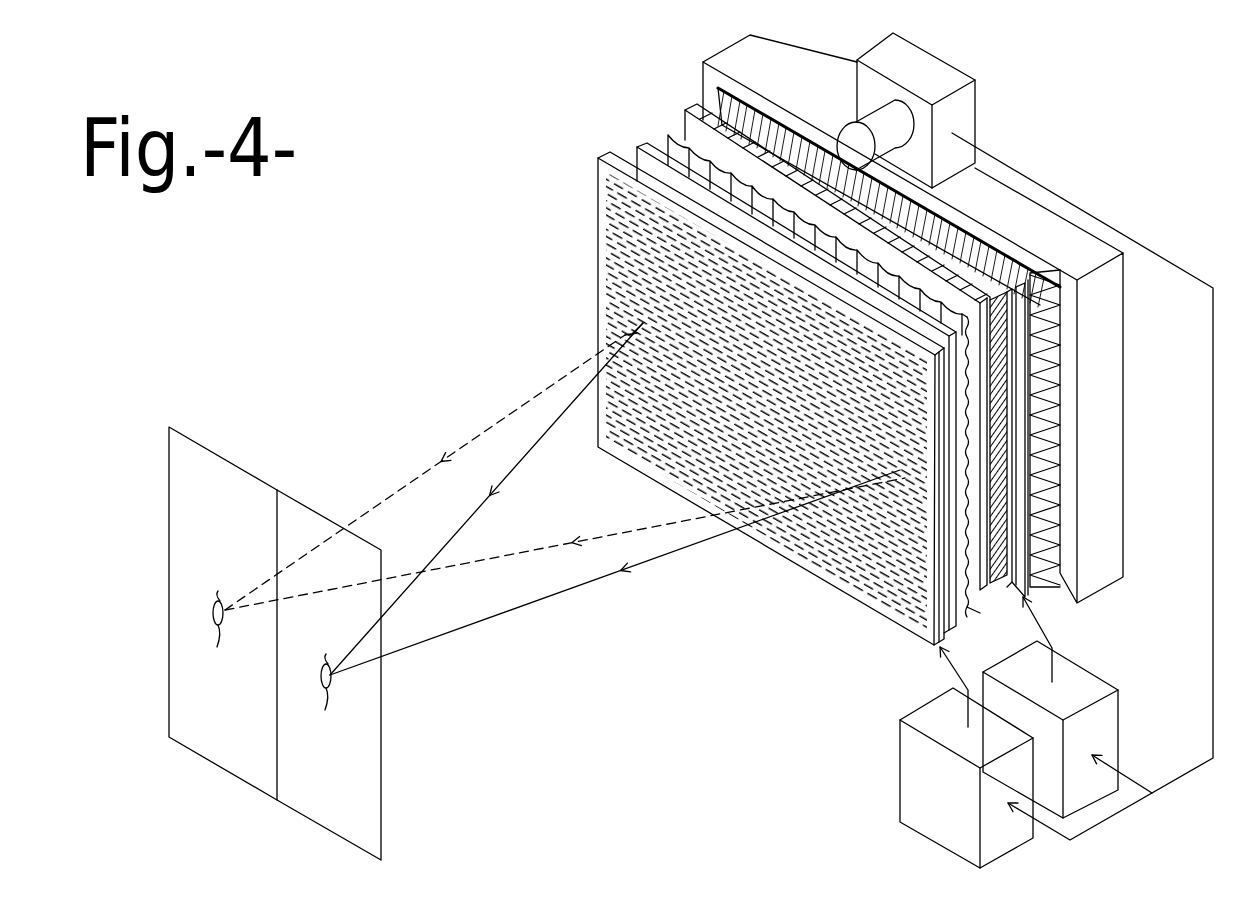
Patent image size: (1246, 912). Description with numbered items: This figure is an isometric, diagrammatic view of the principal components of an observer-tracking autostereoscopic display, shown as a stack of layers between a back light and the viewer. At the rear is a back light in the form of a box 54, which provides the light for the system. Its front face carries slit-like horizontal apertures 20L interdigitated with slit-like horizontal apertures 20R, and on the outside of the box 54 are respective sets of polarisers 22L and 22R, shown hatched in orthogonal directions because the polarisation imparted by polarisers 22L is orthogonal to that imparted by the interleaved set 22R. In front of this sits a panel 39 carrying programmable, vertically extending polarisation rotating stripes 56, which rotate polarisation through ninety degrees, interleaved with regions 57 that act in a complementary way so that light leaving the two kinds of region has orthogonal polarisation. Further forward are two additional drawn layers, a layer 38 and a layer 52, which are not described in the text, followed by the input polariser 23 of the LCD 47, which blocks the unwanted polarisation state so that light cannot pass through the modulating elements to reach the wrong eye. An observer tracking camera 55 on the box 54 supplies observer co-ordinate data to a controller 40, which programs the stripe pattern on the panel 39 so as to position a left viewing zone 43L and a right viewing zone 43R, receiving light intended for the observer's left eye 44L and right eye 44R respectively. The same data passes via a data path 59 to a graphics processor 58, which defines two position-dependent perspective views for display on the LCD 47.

The slit-like horizontal apertures 20L is at (1058, 414).
The slit-like horizontal apertures 20R is at (1057, 456).
The polarisers 22L is at (1057, 392).
The polarisers 22R is at (1057, 430).
The input polariser 23 is at (605, 157).
The lenticular lens array 38 is at (668, 133).
The panel 39 is at (684, 110).
The controller 40 is at (1088, 678).
The viewing zone 43L is at (193, 515).
The viewing zone 43R is at (370, 720).
The left eye 44L is at (212, 610).
The right eye 44R is at (331, 678).
The LCD 47 is at (853, 600).
The polarizer plate 52 is at (643, 147).
The box 54 is at (1077, 238).
The observer tracking camera 55 is at (890, 55).
The polarisation rotating vertically extending stripes 56 is at (752, 130).
The interleaved regions 57 is at (1010, 300).
The graphics processor 58 is at (927, 722).
The data path 59 is at (1213, 610).